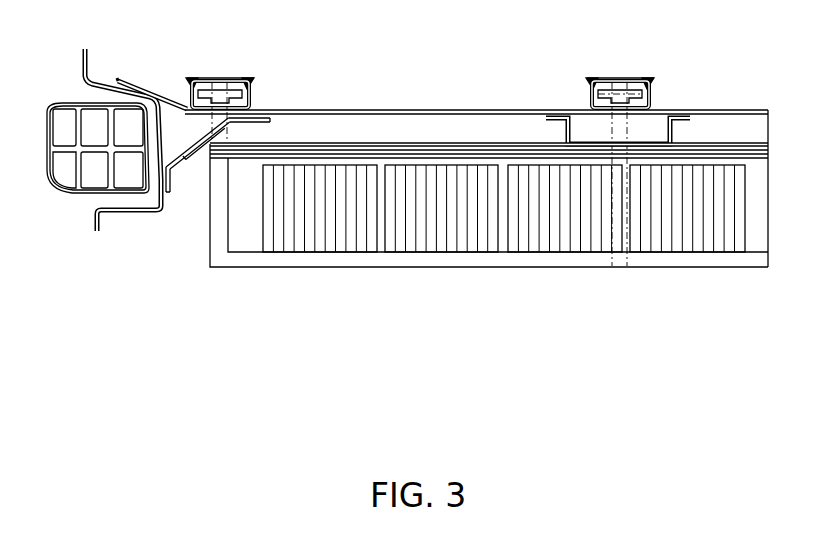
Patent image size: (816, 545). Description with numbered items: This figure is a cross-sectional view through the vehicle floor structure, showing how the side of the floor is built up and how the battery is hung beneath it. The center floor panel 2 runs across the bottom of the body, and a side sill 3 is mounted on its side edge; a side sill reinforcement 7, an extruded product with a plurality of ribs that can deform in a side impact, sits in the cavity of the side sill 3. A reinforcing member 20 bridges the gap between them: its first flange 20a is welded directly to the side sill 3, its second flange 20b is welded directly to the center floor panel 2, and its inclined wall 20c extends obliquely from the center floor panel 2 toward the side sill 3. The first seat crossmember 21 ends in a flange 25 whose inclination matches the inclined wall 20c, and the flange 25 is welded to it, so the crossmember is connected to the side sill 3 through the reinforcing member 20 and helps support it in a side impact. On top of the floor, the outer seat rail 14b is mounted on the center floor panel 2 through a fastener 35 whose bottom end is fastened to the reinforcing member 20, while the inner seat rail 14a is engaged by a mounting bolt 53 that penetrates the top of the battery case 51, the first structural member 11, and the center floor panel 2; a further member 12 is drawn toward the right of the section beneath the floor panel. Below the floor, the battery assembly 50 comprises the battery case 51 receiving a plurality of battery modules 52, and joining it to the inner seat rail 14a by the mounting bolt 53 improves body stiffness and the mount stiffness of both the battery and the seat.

The center floor panel 2 is at (430, 110).
The side sill 3 is at (80, 62).
The side sill reinforcement 7 is at (47, 130).
The first structural member 11 is at (543, 113).
The side member 12 is at (742, 143).
The inner seat rail 14a is at (642, 77).
The outer seat rail 14b is at (242, 78).
The reinforcing member 20 is at (229, 165).
The first flange 20a is at (150, 214).
The second flange 20b is at (271, 120).
The inclined wall 20c is at (196, 133).
The first seat crossmember 21 is at (489, 79).
The flange 25 is at (198, 162).
The fastener 35 is at (207, 127).
The battery assembly 50 is at (489, 193).
The battery case 51 is at (343, 264).
The battery module 52 is at (363, 175).
The mounting bolt 53 is at (603, 125).